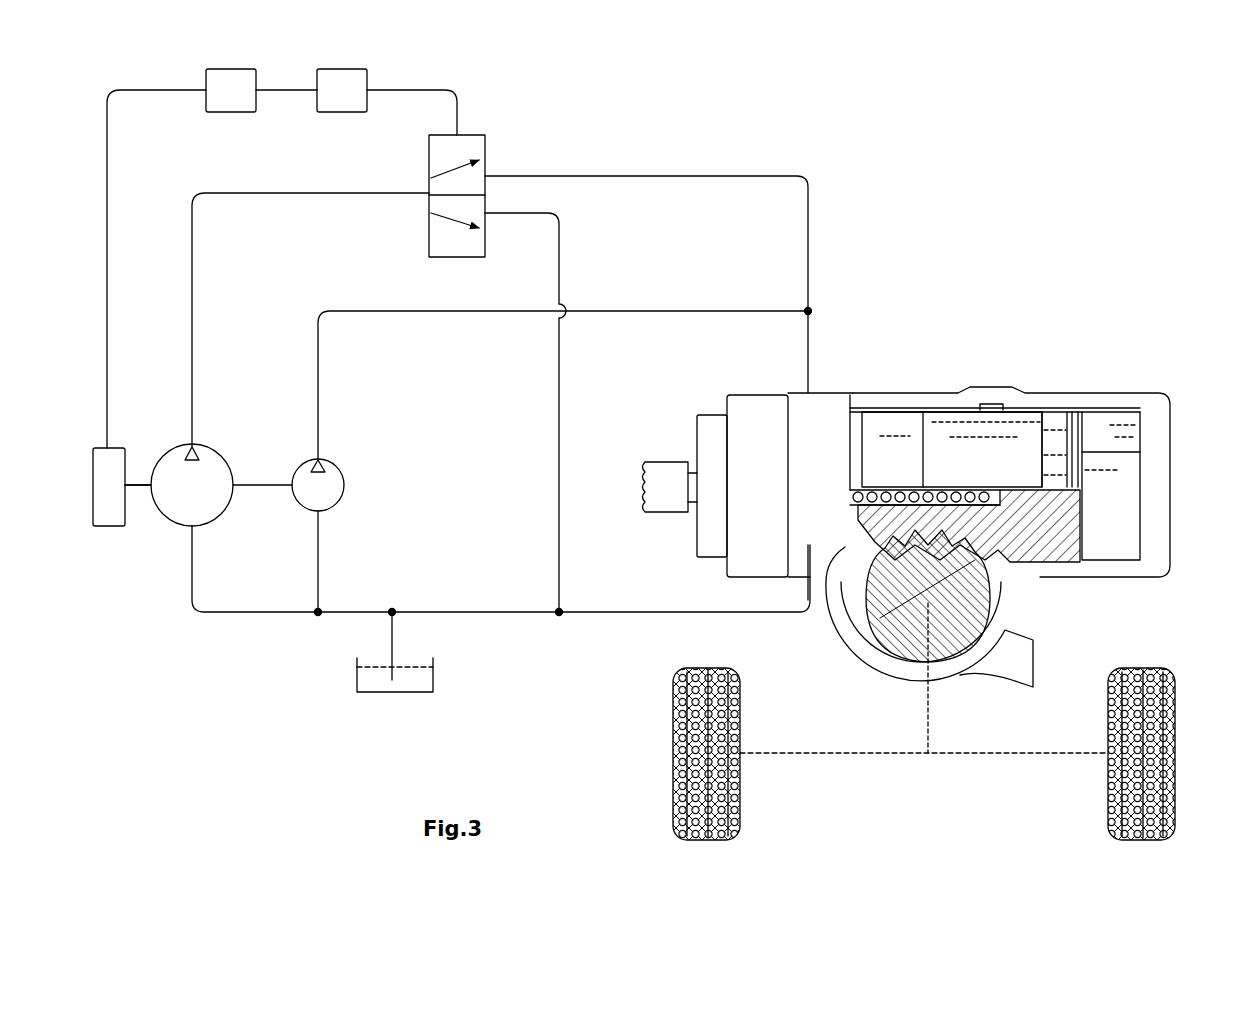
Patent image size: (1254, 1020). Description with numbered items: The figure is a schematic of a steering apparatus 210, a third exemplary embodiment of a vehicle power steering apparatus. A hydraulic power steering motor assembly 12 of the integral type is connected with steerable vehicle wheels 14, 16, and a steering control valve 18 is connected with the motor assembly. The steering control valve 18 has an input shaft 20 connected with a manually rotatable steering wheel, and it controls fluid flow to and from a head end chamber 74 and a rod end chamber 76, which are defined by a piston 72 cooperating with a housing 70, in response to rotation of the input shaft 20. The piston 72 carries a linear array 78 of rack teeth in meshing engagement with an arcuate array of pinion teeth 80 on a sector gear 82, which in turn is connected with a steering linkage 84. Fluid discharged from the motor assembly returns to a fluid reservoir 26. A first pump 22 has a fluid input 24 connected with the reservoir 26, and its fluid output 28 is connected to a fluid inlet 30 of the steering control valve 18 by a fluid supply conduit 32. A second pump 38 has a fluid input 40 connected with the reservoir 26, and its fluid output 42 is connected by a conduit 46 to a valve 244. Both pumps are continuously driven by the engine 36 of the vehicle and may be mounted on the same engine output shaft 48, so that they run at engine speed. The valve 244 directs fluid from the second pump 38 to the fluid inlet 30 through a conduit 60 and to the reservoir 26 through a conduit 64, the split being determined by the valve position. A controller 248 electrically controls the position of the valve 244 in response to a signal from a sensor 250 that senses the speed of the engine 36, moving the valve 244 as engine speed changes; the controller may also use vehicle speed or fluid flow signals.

The hydraulic power steering motor assembly 12 is at (1174, 465).
The steerable vehicle wheel 14 is at (673, 812).
The steerable vehicle wheel 16 is at (1175, 812).
The steering control valve 18 is at (712, 558).
The input shaft 20 is at (660, 497).
The first pump 22 is at (330, 493).
The fluid input 24 is at (320, 513).
The fluid reservoir 26 is at (420, 680).
The fluid output 28 is at (318, 462).
The fluid inlet 30 is at (812, 393).
The fluid supply conduit 32 is at (645, 311).
The engine 36 is at (107, 507).
The second pump 38 is at (177, 483).
The fluid input 40 is at (193, 527).
The fluid output 42 is at (196, 450).
The conduit 46 is at (302, 196).
The output shaft 48 is at (138, 487).
The conduit 60 is at (725, 176).
The conduit 64 is at (559, 258).
The housing 70 is at (1095, 400).
The piston 72 is at (948, 443).
The head end chamber 74 is at (845, 547).
The rod end chamber 76 is at (1122, 528).
The linear array of rack teeth 78 is at (1040, 567).
The pinion teeth 80 is at (1003, 600).
The sector gear 82 is at (903, 623).
The steering linkage 84 is at (932, 705).
The steering apparatus 210 is at (1012, 228).
The valve 244 is at (476, 135).
The controller 248 is at (342, 92).
The sensor 250 is at (228, 100).